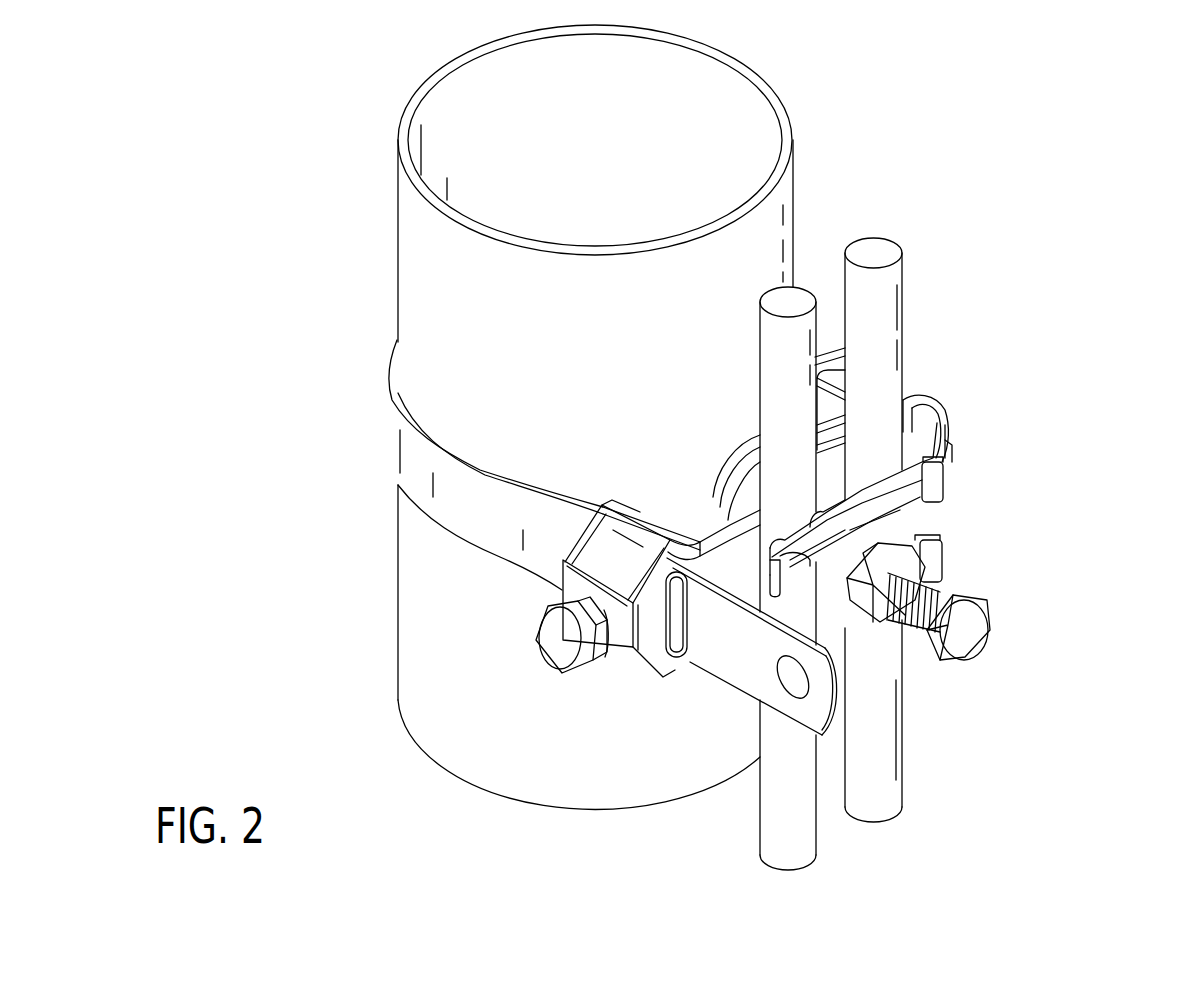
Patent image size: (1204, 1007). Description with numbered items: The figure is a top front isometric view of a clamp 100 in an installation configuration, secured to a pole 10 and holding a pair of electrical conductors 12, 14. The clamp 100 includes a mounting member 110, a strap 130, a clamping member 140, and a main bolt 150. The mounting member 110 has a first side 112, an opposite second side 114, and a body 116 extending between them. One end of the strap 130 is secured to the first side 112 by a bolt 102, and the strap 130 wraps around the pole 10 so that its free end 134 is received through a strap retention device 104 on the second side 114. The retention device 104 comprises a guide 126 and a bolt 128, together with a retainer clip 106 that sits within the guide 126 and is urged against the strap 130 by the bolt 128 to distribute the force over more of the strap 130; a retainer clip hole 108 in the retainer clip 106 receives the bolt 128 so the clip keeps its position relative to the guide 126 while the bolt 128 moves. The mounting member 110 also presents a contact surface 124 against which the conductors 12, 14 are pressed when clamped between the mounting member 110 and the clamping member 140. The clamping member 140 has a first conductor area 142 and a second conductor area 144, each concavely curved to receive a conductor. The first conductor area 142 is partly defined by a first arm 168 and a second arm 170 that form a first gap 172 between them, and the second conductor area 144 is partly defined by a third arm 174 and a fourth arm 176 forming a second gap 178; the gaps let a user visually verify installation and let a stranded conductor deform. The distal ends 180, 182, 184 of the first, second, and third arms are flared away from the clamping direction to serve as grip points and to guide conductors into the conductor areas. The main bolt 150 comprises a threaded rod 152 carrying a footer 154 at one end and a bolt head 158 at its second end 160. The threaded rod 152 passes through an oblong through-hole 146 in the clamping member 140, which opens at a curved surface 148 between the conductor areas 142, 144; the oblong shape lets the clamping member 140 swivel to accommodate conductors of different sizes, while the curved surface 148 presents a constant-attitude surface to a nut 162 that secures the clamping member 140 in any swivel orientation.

The pole 10 is at (778, 103).
The conductor 12 is at (898, 278).
The conductor 14 is at (766, 332).
The clamp 100 is at (1132, 452).
The bolt 102 is at (941, 410).
The strap retention device 104 is at (595, 690).
The retainer clip 106 is at (570, 591).
The retainer clip hole 108 is at (606, 638).
The mounting member 110 is at (658, 496).
The first side 112 is at (905, 396).
The second side 114 is at (609, 505).
The body 116 is at (688, 530).
The contact surface 124 is at (688, 530).
The guide 126 is at (596, 545).
The bolt 128 is at (548, 650).
The strap 130 is at (407, 480).
The free end 134 is at (705, 653).
The clamping member 140 is at (953, 460).
The first conductor area 142 is at (892, 500).
The second conductor area 144 is at (803, 532).
The through-hole 146 is at (840, 640).
The curved surface 148 is at (930, 510).
The main bolt 150 is at (995, 640).
The threaded rod 152 is at (940, 585).
The footer 154 is at (750, 452).
The bolt head 158 is at (967, 628).
The second end 160 is at (918, 622).
The nut 162 is at (858, 620).
The first arm 168 is at (937, 487).
The second arm 170 is at (944, 577).
The first gap 172 is at (928, 522).
The third arm 174 is at (789, 610).
The fourth arm 176 is at (822, 600).
The second gap 178 is at (787, 612).
The distal end 180 is at (943, 475).
The distal end 182 is at (943, 547).
The distal end 184 is at (720, 560).